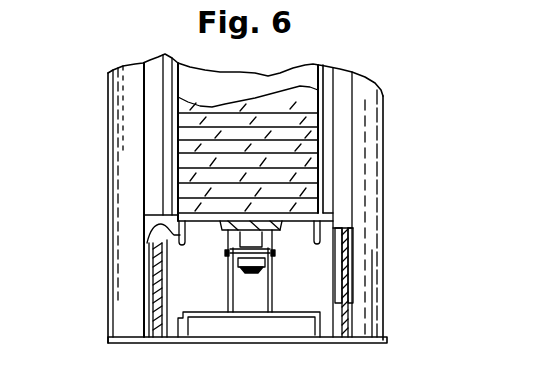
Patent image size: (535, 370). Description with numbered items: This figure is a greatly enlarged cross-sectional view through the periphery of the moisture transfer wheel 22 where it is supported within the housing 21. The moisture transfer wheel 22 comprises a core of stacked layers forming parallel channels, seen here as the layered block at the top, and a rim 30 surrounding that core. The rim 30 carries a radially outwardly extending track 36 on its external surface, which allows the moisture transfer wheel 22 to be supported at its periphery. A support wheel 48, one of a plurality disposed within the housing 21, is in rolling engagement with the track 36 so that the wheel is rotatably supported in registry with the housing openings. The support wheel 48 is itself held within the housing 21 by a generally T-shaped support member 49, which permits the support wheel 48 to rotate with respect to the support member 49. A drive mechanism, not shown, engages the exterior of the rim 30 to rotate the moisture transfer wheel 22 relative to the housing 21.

The moisture transfer wheel 22 is at (318, 146).
The rim 30 is at (323, 216).
The track 36 is at (222, 229).
The support wheels 48 is at (272, 253).
The support member 49 is at (230, 291).
The housing 21 is at (388, 340).